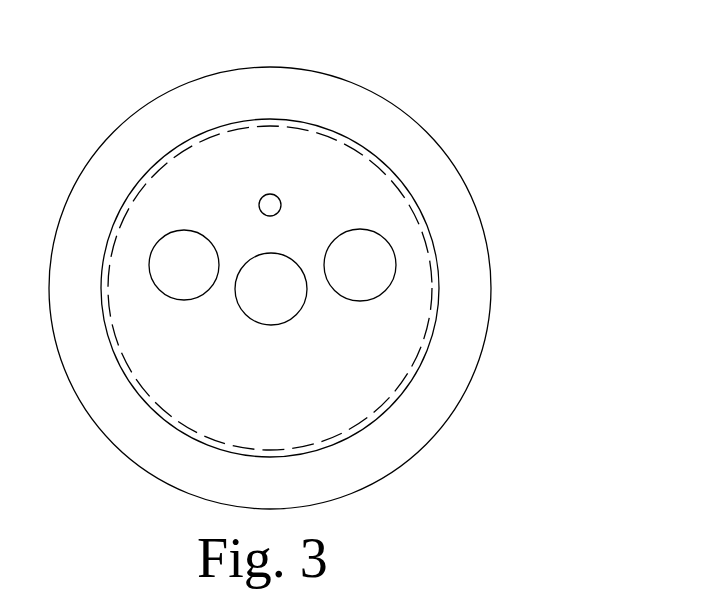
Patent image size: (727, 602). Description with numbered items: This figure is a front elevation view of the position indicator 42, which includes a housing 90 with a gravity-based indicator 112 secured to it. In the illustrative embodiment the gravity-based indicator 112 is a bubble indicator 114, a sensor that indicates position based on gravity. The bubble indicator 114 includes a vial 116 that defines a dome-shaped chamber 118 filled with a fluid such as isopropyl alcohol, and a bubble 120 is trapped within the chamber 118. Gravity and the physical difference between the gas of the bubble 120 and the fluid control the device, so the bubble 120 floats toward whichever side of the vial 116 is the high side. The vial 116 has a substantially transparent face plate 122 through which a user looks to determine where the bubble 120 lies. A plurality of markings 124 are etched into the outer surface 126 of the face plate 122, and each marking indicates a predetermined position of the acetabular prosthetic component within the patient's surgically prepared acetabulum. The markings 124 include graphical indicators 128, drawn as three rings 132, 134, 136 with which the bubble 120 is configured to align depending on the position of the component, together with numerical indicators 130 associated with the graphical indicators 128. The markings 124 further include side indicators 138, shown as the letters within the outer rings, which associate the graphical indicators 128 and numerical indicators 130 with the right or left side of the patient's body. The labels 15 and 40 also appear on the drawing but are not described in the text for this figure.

The position indicator 42 is at (516, 86).
The housing 90 is at (455, 165).
The gravity-based indicator 112 is at (228, 140).
The bubble indicator 114 is at (333, 166).
The vial 116 is at (398, 350).
The chamber 118 is at (432, 292).
The bubble 120 is at (270, 194).
The face plate 122 is at (137, 329).
The markings 124 is at (172, 232).
The outer surface 126 is at (335, 418).
The graphical indicators 128 is at (198, 232).
The numerical indicators 130 is at (258, 280).
The ring 132 is at (278, 310).
The ring 134 is at (205, 298).
The ring 136 is at (342, 296).
The side indicators 138 is at (178, 275).
The indicator button 15 is at (184, 300).
The indicator circle 40 is at (149, 265).